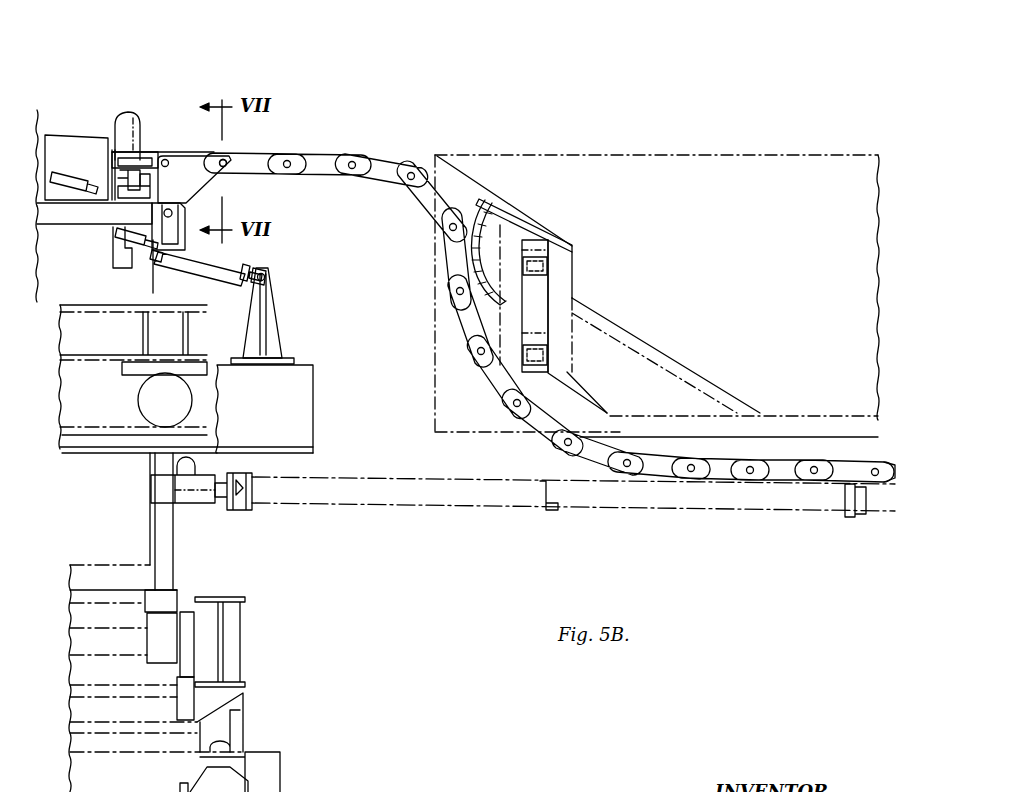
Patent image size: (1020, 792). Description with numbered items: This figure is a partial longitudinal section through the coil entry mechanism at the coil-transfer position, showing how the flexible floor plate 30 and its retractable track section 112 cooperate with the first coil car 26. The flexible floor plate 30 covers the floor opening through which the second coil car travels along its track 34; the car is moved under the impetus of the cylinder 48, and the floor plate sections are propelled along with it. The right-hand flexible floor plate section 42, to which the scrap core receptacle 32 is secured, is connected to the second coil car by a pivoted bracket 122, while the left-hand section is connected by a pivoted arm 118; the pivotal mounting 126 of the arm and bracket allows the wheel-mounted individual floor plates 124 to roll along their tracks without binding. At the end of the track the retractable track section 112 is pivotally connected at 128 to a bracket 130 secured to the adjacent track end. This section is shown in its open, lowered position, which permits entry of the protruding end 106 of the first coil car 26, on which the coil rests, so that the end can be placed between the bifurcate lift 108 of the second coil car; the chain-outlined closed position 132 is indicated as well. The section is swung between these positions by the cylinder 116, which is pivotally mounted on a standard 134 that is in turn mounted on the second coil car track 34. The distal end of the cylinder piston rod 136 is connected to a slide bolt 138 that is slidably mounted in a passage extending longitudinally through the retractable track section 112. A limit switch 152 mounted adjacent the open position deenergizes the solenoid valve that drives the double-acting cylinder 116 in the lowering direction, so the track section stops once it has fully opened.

The first coil car 26 is at (60, 135).
The flexible floor plate 30 is at (503, 393).
The scrap core receptacle 32 is at (485, 222).
The second coil car track 34 is at (308, 364).
The right-hand flexible floor plate section 42 is at (560, 422).
The cylinder 48 is at (625, 520).
The protruding end 106 is at (95, 136).
The bifurcate lift 108 is at (140, 150).
The retractable track section 112 is at (113, 258).
The cylinder 116 is at (208, 264).
The pivoted arm 118 is at (40, 268).
The pivoted bracket 122 is at (218, 181).
The individual floor plates 124 is at (440, 172).
The pivotal mounting 126 is at (189, 248).
The pivotal connection 128 is at (118, 178).
The bracket 130 is at (138, 156).
The closed position 132 is at (55, 208).
The standard 134 is at (272, 307).
The cylinder piston rod 136 is at (137, 253).
The slide bolt 138 is at (75, 171).
The limit switch 152 is at (137, 178).